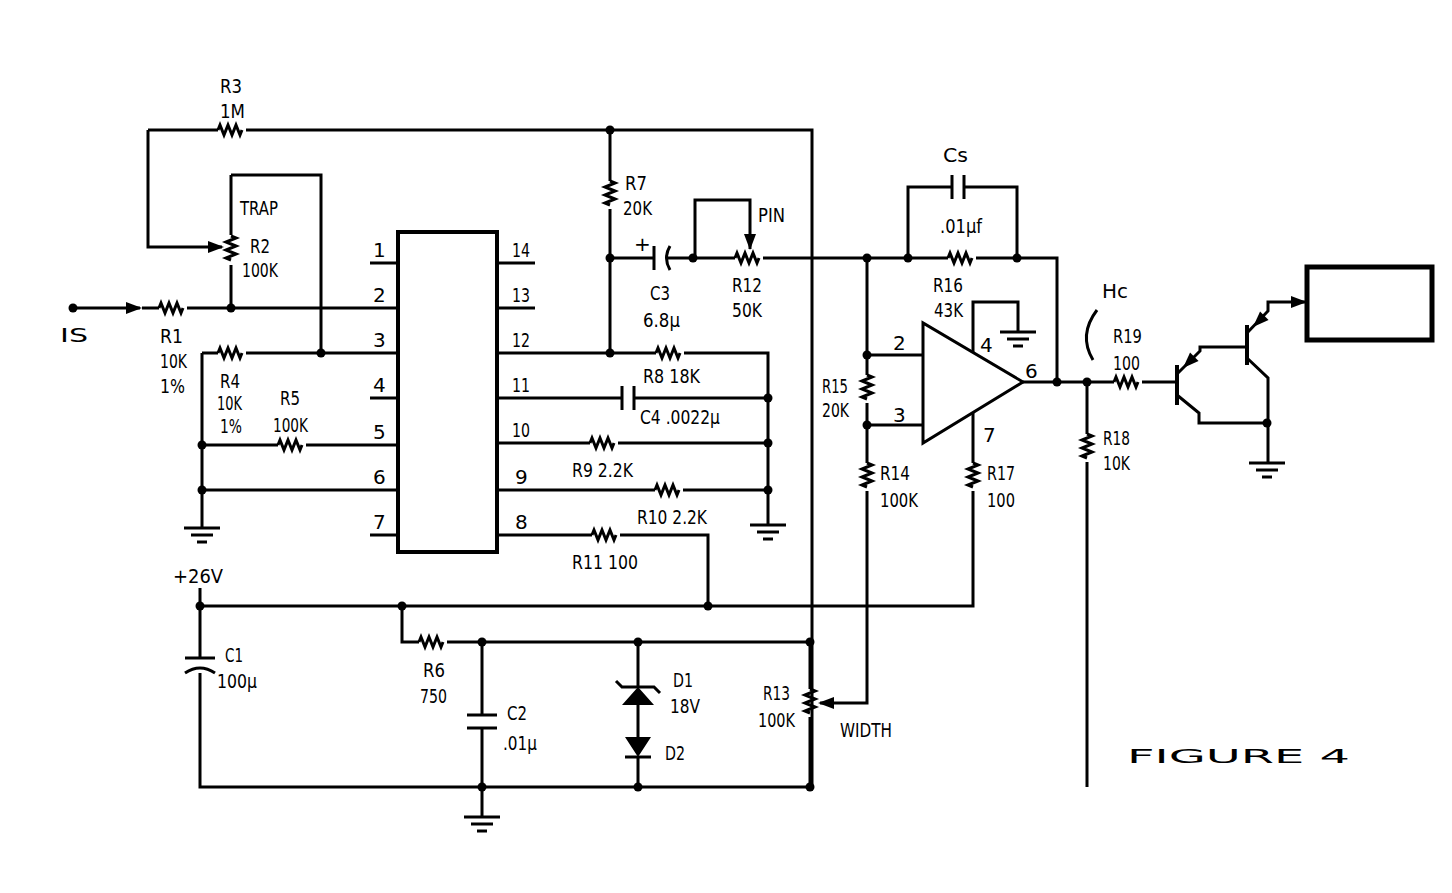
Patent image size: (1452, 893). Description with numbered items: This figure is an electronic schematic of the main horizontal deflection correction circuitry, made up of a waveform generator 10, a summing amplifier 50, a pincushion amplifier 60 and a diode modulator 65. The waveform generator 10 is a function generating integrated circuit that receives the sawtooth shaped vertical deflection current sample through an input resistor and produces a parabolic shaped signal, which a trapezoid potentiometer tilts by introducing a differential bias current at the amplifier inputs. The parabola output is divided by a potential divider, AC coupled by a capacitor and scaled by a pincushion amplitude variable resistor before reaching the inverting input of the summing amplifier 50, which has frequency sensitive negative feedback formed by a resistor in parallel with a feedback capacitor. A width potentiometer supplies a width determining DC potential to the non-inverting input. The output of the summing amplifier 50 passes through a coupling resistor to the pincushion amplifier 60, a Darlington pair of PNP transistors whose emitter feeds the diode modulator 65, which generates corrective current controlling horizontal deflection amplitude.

The waveform generator 10 is at (458, 218).
The summing amplifier 50 is at (1053, 449).
The pincushion amplifier 60 is at (1202, 306).
The diode modulator 65 is at (1373, 391).